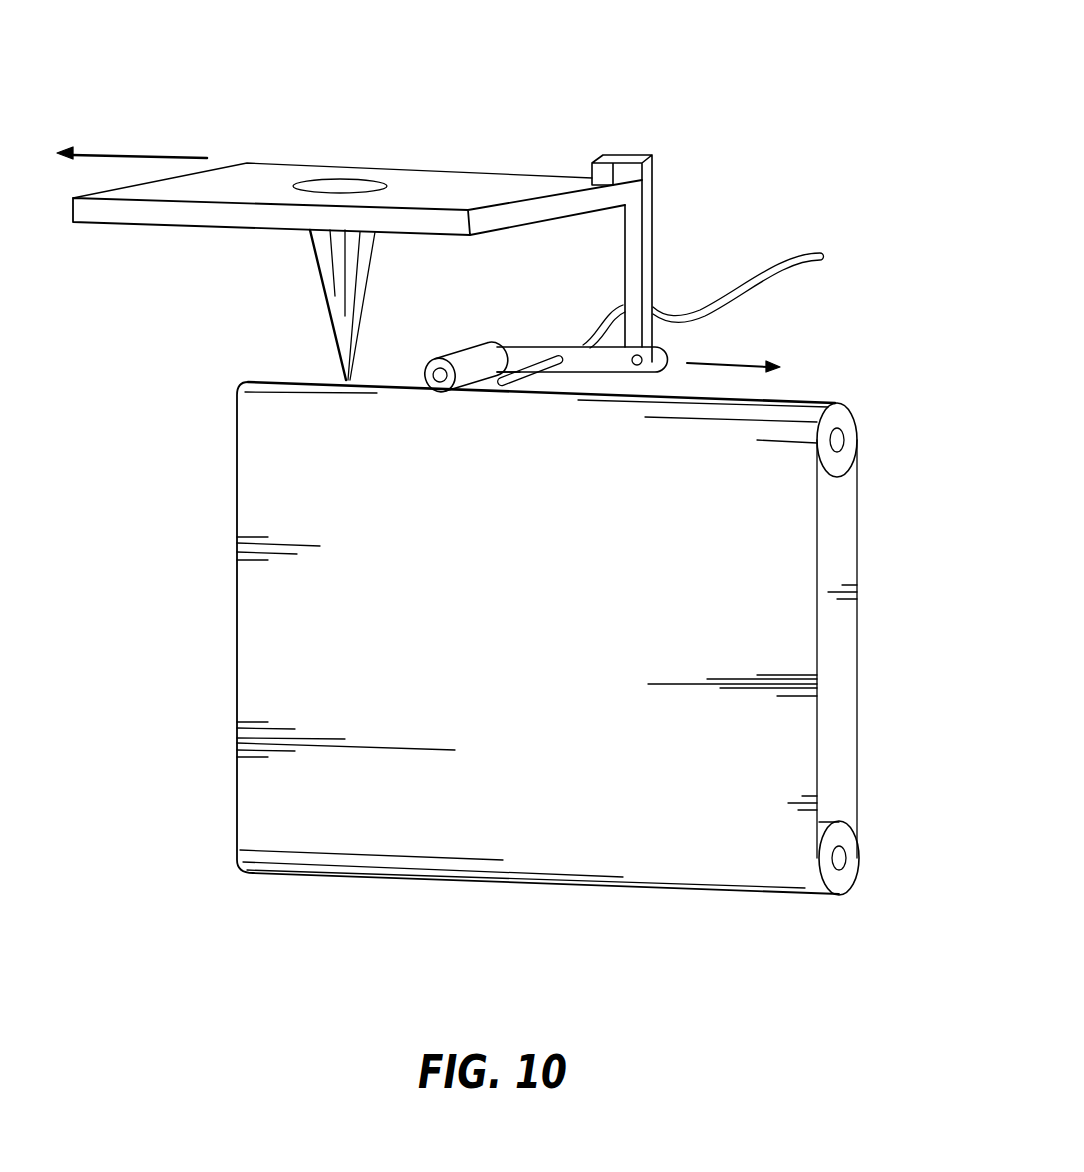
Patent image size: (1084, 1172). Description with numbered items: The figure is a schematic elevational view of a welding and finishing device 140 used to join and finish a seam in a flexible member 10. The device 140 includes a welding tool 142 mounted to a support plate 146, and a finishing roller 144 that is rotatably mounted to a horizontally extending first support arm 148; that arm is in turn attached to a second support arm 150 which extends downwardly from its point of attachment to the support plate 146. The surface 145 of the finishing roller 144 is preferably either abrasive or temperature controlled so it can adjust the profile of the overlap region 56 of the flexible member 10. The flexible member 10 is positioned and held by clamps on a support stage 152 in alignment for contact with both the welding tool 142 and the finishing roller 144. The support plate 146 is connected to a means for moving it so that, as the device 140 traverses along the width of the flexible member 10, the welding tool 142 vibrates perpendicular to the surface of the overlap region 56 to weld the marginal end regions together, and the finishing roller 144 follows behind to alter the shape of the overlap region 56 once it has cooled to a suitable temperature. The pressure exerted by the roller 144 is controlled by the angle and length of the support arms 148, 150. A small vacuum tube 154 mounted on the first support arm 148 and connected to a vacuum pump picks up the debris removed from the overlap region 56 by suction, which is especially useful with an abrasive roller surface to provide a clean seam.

The flexible member 10 is at (257, 639).
The overlap region 56 is at (803, 402).
The welding and finishing device 140 is at (405, 128).
The welding tool 142 is at (333, 303).
The finishing roller 144 is at (438, 344).
The surface 145 is at (465, 352).
The support plate 146 is at (468, 187).
The first support arm 148 is at (522, 343).
The second support arm 150 is at (657, 221).
The support stage 152 is at (840, 440).
The vacuum tube 154 is at (542, 390).